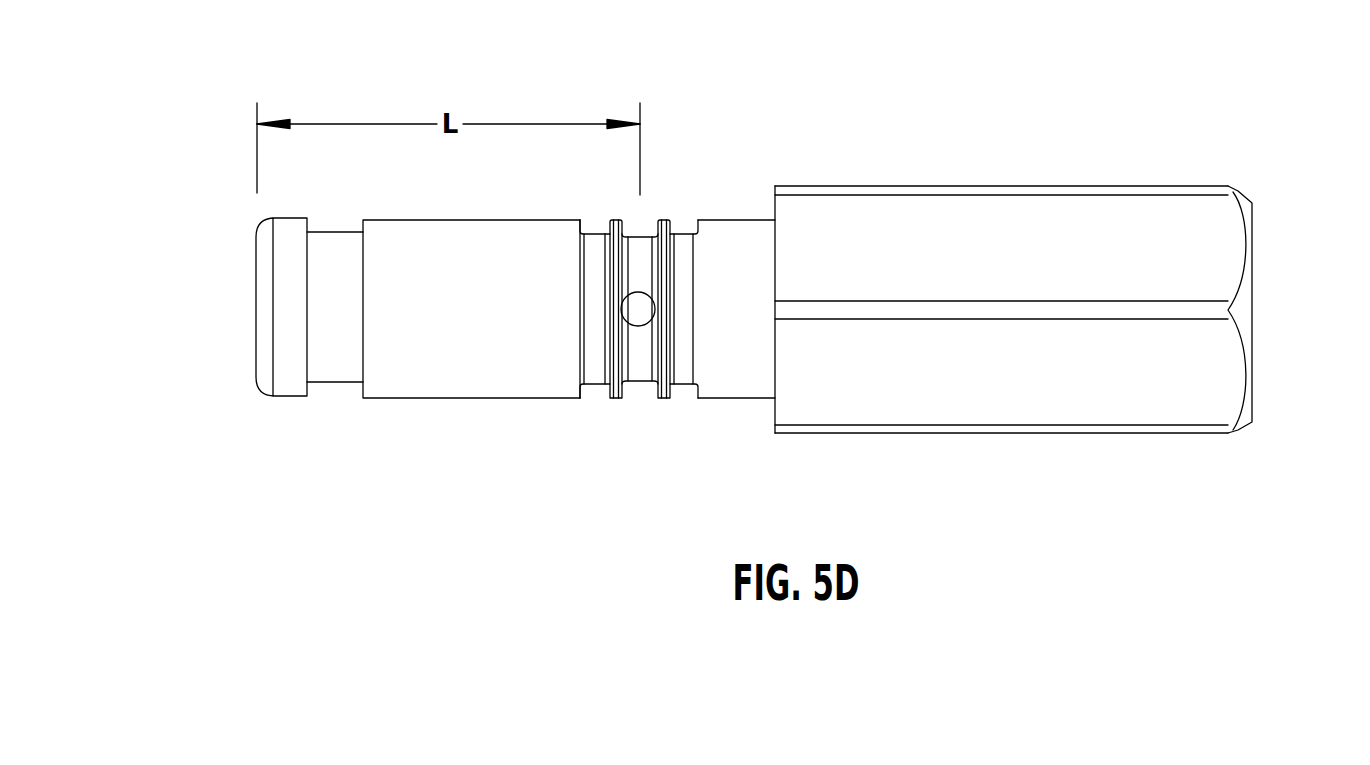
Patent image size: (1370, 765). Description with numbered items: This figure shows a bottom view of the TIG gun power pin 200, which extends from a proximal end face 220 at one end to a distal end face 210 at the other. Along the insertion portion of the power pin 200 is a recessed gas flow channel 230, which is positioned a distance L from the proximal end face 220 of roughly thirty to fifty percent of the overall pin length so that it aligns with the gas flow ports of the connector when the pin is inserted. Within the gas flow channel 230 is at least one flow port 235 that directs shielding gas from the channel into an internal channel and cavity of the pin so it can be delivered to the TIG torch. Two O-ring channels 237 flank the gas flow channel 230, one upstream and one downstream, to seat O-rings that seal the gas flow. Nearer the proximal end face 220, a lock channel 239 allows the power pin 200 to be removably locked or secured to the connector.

The power pin 200 is at (797, 72).
The distal end face 210 is at (1253, 245).
The proximal end face 220 is at (256, 325).
The gas flow channel 230 is at (640, 227).
The flow port 235 is at (638, 310).
The O-ring channel 237 is at (596, 392).
The lock channel 239 is at (330, 222).